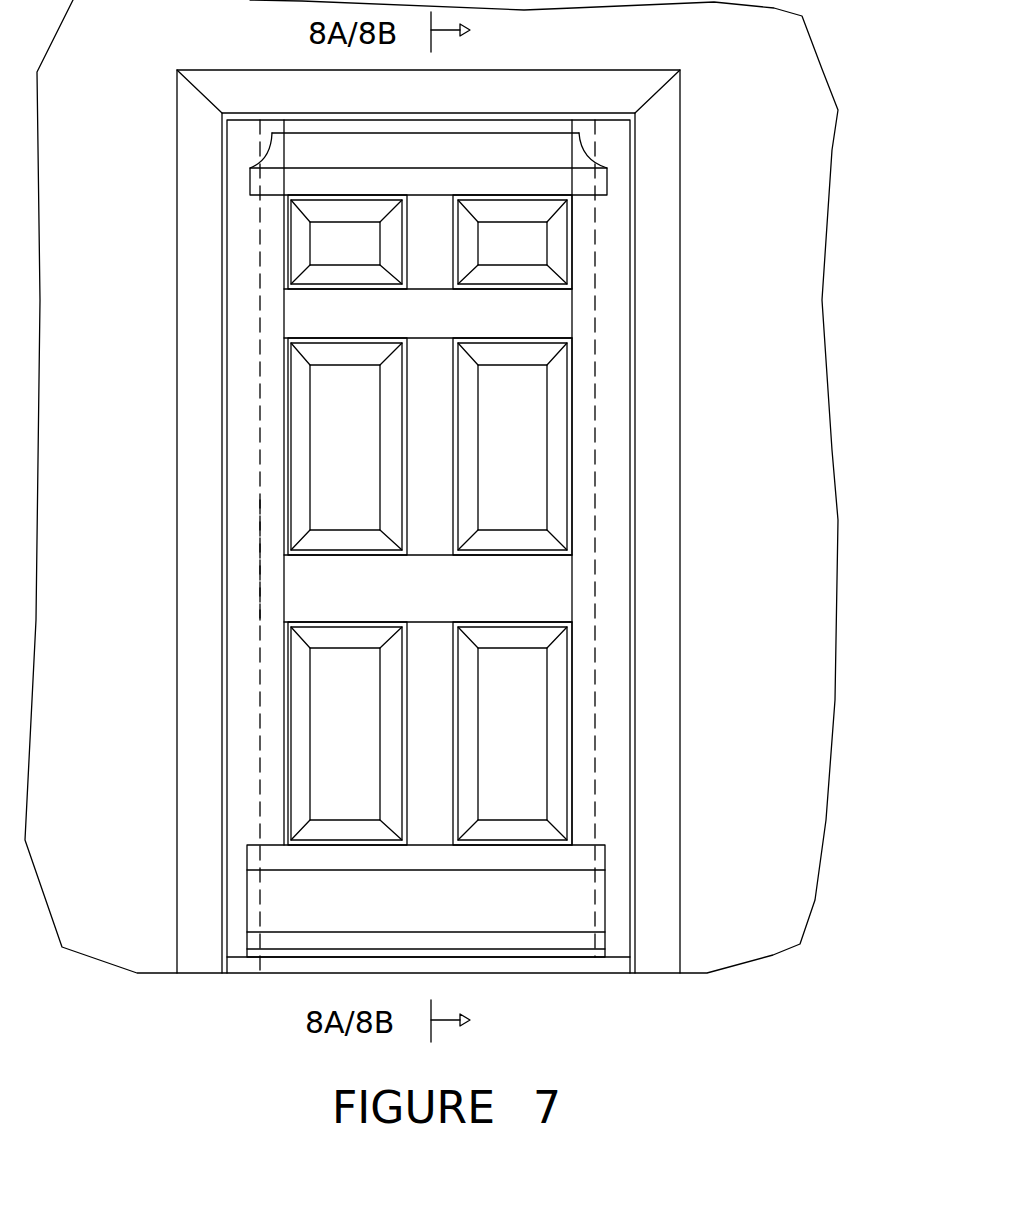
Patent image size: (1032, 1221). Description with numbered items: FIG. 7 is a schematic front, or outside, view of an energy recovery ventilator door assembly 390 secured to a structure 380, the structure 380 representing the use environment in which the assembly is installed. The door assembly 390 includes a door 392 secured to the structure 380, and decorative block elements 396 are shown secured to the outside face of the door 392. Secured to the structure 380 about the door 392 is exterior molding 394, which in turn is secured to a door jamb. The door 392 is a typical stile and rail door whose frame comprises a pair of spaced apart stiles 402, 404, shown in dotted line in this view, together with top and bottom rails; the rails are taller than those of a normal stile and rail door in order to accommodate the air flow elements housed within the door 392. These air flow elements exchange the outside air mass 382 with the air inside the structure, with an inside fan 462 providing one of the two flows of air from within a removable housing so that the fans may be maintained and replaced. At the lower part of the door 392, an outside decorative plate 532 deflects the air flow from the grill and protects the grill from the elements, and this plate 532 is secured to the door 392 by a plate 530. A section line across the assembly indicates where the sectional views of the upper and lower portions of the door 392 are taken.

The structure 380 is at (767, 198).
The outside air mass 382 is at (507, 579).
The energy recovery ventilator door assembly 390 is at (434, 521).
The door 392 is at (248, 220).
The exterior molding 394 is at (205, 303).
The decorative block elements 396 is at (527, 400).
The stile 402 is at (240, 555).
The stile 404 is at (615, 620).
The inside fan 462 is at (260, 360).
The plate 530 is at (507, 929).
The outside decorative plate 532 is at (545, 912).